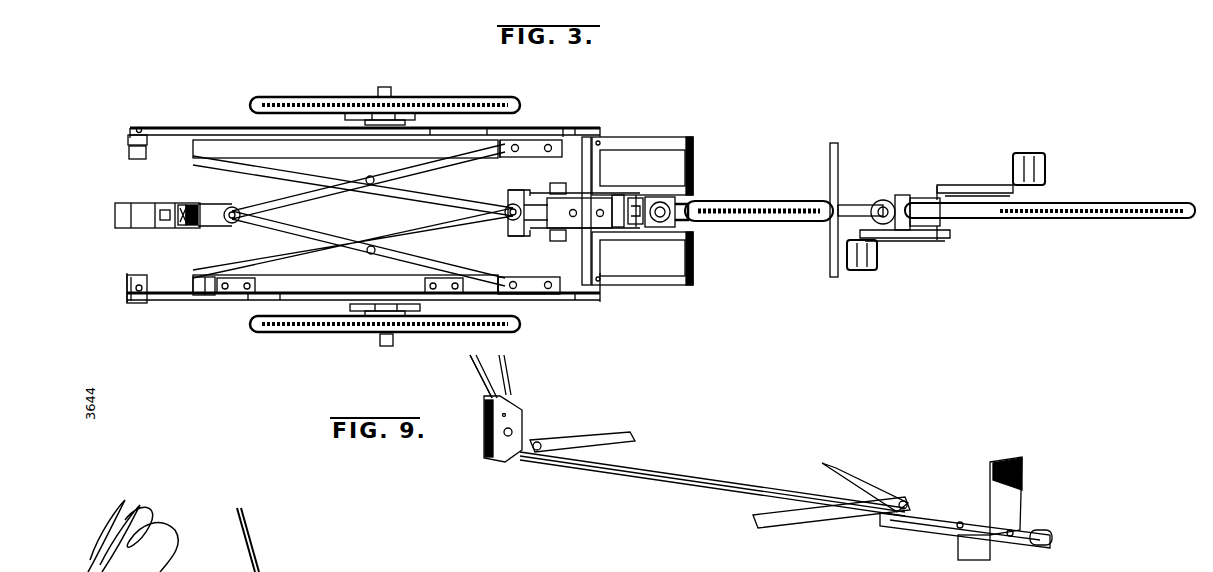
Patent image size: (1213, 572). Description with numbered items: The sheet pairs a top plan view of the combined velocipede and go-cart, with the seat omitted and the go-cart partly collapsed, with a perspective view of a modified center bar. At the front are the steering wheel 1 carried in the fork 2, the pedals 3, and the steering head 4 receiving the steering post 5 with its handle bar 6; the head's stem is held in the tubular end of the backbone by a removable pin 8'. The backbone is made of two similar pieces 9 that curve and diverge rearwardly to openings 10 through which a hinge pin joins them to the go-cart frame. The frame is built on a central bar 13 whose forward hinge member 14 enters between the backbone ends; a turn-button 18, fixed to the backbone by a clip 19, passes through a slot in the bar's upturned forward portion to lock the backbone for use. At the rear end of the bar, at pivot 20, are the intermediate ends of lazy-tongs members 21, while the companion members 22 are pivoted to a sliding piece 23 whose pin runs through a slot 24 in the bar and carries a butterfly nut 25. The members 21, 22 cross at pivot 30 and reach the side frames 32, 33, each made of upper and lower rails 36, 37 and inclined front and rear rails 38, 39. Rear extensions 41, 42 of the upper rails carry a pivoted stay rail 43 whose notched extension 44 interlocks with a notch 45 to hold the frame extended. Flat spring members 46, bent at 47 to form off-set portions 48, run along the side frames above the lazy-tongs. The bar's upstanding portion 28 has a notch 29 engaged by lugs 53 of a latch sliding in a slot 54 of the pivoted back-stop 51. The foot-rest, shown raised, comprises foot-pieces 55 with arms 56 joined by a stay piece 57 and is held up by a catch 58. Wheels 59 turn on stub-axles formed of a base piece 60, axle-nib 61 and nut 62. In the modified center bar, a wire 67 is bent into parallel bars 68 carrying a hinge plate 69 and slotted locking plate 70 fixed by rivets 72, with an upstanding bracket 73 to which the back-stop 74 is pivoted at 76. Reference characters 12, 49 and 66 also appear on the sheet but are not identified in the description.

In FIG. 3, the front steering wheel 1 is at (1046, 218).
In FIG. 3, the fork 2 is at (925, 232).
In FIG. 3, the pedals 3 is at (1045, 170).
In FIG. 3, the steering head 4 is at (905, 232).
In FIG. 3, the steering post 5 is at (871, 200).
In FIG. 3, the handle bar 6 is at (838, 146).
In FIG. 3, the removable pin or bolt 8' is at (874, 184).
In FIG. 3, the backbone pieces 9 is at (744, 203).
In FIG. 3, the openings 10 is at (619, 196).
In FIG. 3, the coupling 12 is at (690, 192).
In FIG. 3, the central bar 13 is at (353, 191).
In FIG. 3, the hinge member 14 is at (651, 198).
In FIG. 3, the turn-button 18 is at (640, 228).
In FIG. 3, the clip 19 is at (638, 198).
In FIG. 3, the pivot 20 is at (233, 207).
In FIG. 3, the lazy-tongs members 21 is at (270, 225).
In FIG. 3, the lazy-tongs members 22 is at (353, 242).
In FIG. 3, the sliding piece 23 is at (520, 200).
In FIG. 3, the slot 24 is at (505, 186).
In FIG. 3, the butterfly nut 25 is at (579, 213).
In FIG. 3, the upstanding portion 28 is at (196, 226).
In FIG. 3, the notch 29 is at (191, 204).
In FIG. 3, the pivotal connection 30 is at (370, 176).
In FIG. 3, the side frame 32 is at (181, 300).
In FIG. 3, the side frame 33 is at (200, 128).
In FIG. 3, the upper rails 36 is at (447, 126).
In FIG. 3, the lower rails 37 is at (488, 128).
In FIG. 3, the front rails 38 is at (585, 134).
In FIG. 3, the rear rails 39 is at (139, 127).
In FIG. 3, the right-angled extension 41 is at (127, 297).
In FIG. 3, the right-angled extension 42 is at (129, 156).
In FIG. 9, the right-angled extension 42 is at (955, 530).
In FIG. 3, the stay rail 43 is at (203, 297).
In FIG. 3, the notched right-angled extension 44 is at (208, 304).
In FIG. 3, the notch 45 is at (128, 140).
In FIG. 3, the spring members 46 is at (345, 216).
In FIG. 3, the bend 47 is at (520, 137).
In FIG. 3, the off-set portions 48 is at (512, 153).
In FIG. 3, the bolt plate 49 is at (235, 294).
In FIG. 3, the back-stop 51 is at (136, 228).
In FIG. 3, the spaced lugs 53 is at (184, 228).
In FIG. 3, the slot 54 is at (167, 228).
In FIG. 3, the foot-pieces 55 is at (679, 137).
In FIG. 3, the arms 56 is at (558, 183).
In FIG. 3, the stay piece 57 is at (565, 136).
In FIG. 3, the turn-button or catch 58 is at (625, 230).
In FIG. 3, the wheels 59 is at (320, 97).
In FIG. 3, the base piece 60 is at (413, 118).
In FIG. 3, the axle-nib 61 is at (385, 87).
In FIG. 3, the nut 62 is at (402, 113).
In FIG. 9, the bar 66 is at (831, 495).
In FIG. 9, the piece of wire 67 is at (757, 477).
In FIG. 9, the spaced parallel bars 68 is at (683, 476).
In FIG. 9, the hinge plate 69 is at (965, 530).
In FIG. 9, the upstanding slotted locking plate 70 is at (1025, 515).
In FIG. 9, the rivets 72 is at (525, 402).
In FIG. 9, the upstanding bracket 73 is at (518, 424).
In FIG. 9, the back-stop 74 is at (482, 390).
In FIG. 9, the pivot 76 is at (556, 443).